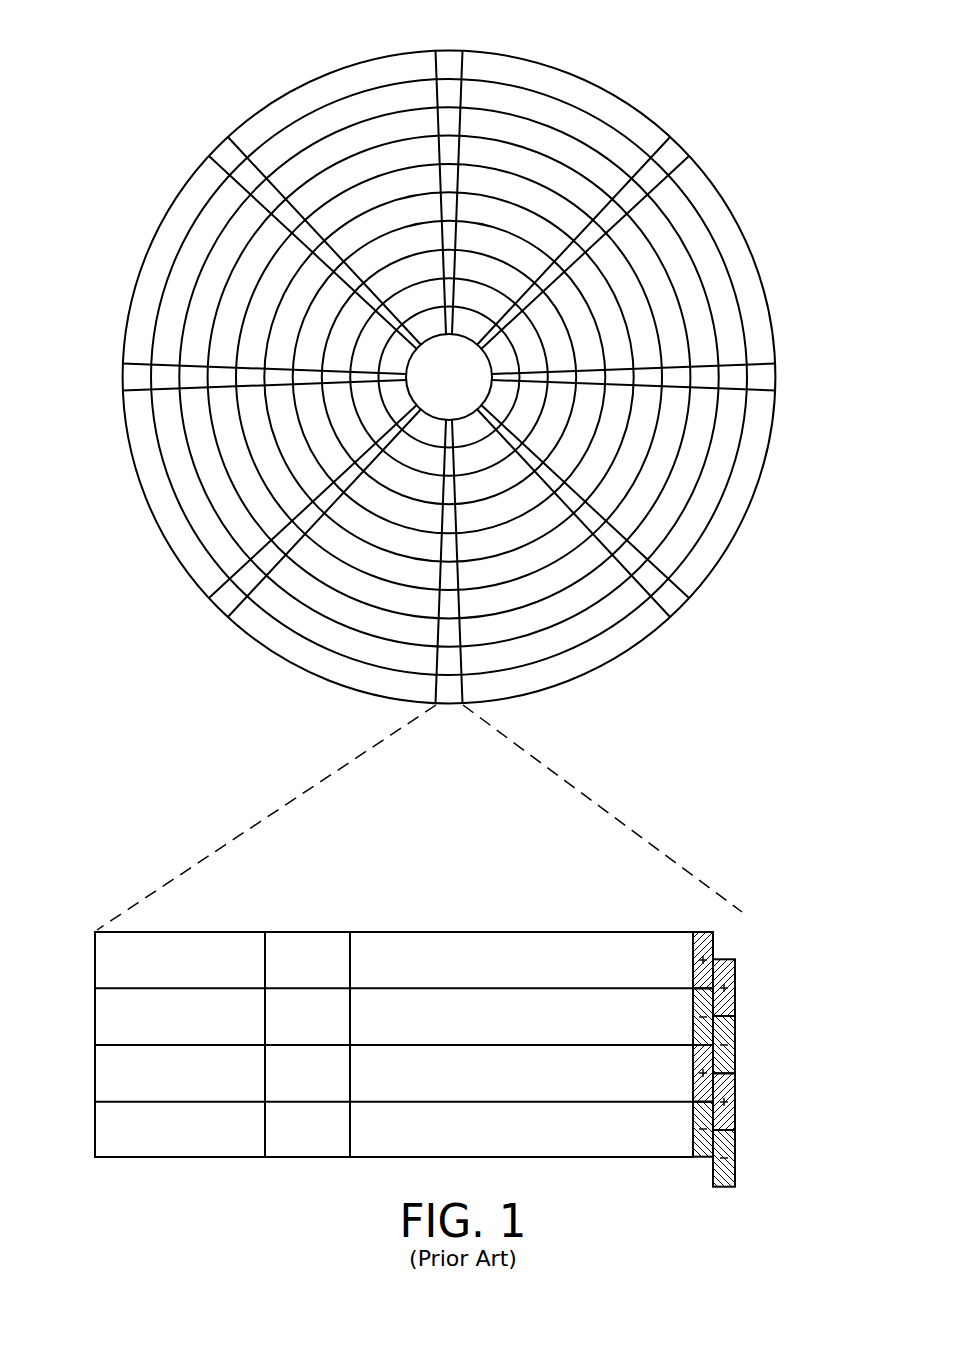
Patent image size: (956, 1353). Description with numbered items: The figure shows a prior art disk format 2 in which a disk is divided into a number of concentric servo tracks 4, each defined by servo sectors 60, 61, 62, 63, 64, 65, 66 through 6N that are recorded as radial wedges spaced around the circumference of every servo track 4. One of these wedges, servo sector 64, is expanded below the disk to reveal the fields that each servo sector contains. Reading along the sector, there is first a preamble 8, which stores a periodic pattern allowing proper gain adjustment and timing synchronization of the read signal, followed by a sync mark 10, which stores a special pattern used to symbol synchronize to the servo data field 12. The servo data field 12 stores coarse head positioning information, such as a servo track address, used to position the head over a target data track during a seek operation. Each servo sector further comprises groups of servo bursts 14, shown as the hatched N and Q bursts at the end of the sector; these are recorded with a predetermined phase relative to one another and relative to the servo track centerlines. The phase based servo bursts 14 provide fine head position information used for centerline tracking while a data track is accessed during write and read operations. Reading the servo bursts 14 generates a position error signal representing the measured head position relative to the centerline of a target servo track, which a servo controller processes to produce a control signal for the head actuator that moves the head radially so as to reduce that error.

The disk format 2 is at (200, 48).
The servo track 4 is at (560, 117).
The servo sector 60 is at (450, 60).
The servo sector 61 is at (673, 153).
The servo sector 62 is at (773, 376).
The servo sector 63 is at (672, 603).
The servo sector 64 is at (299, 772).
The servo sector 65 is at (224, 603).
The servo sector 66 is at (127, 375).
The servo sector 6N is at (222, 148).
The preamble 8 is at (188, 930).
The sync mark 10 is at (312, 930).
The servo data field 12 is at (510, 930).
The servo bursts 14 is at (738, 921).